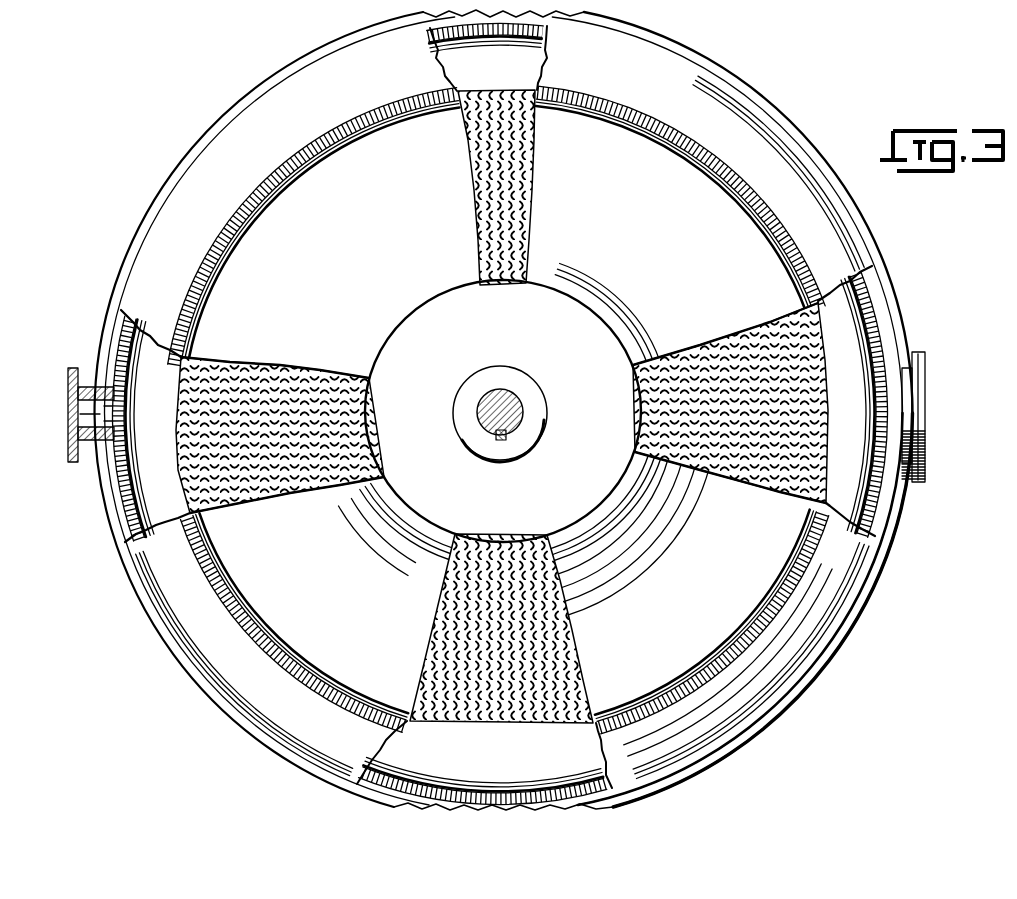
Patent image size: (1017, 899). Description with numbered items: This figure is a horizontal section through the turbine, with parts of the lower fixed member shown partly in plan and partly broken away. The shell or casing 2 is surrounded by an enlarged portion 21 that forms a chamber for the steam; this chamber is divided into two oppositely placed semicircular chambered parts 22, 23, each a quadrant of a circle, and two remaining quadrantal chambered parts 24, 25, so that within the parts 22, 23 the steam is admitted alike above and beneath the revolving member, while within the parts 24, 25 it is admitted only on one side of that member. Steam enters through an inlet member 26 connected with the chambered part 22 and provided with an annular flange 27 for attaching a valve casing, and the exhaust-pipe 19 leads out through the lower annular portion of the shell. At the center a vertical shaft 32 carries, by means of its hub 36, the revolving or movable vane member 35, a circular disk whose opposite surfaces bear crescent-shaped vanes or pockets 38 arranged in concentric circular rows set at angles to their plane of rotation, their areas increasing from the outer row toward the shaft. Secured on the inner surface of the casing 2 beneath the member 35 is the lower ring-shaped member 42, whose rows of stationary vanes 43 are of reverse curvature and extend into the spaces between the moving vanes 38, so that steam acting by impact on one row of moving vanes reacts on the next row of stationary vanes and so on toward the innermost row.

The shell or casing 2 is at (288, 171).
The exhaust-pipe 19 is at (917, 411).
The enlarged portion 21 is at (913, 524).
The semicircular chambered part 22 is at (151, 426).
The semicircular chambered part 23 is at (853, 401).
The quadrantal chambered part 24 is at (487, 57).
The quadrantal chambered part 25 is at (484, 763).
The inlet member 26 is at (78, 415).
The annular flange 27 is at (68, 455).
The vertical shaft 32 is at (521, 408).
The revolving or movable vane member 35 is at (503, 411).
The hub 36 is at (517, 381).
The vanes or pockets 38 is at (530, 190).
The lower ring-shaped member 42 is at (566, 491).
The stationary vanes 43 is at (470, 205).